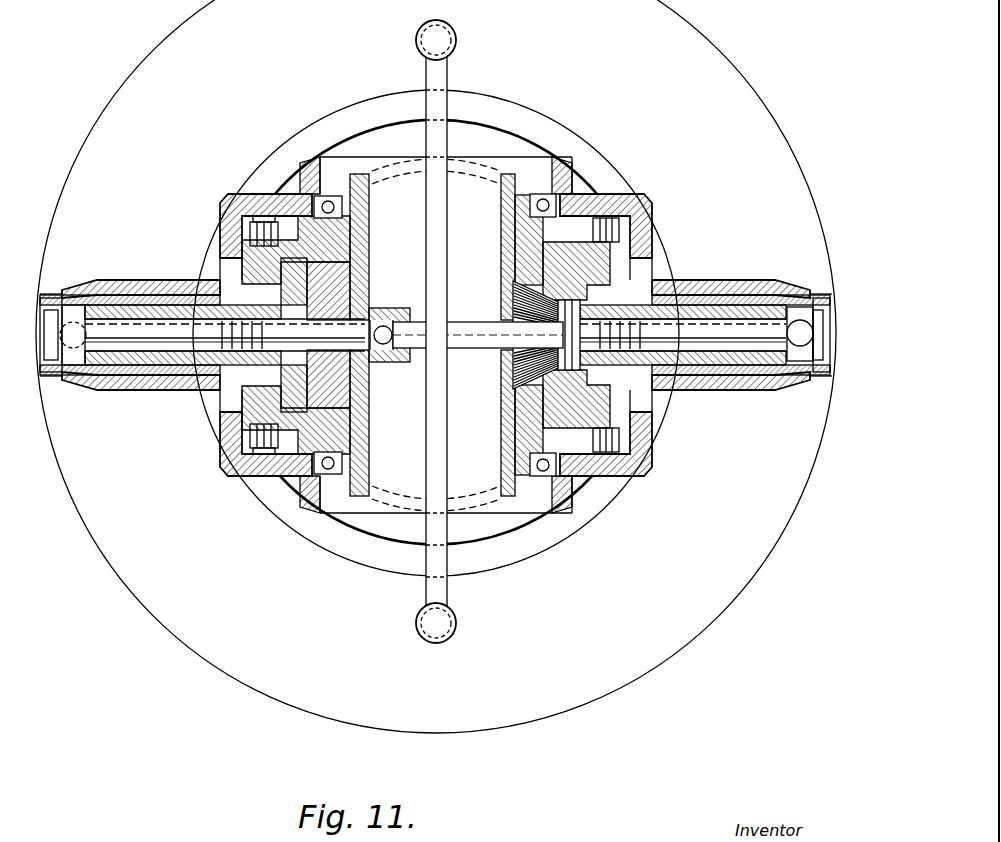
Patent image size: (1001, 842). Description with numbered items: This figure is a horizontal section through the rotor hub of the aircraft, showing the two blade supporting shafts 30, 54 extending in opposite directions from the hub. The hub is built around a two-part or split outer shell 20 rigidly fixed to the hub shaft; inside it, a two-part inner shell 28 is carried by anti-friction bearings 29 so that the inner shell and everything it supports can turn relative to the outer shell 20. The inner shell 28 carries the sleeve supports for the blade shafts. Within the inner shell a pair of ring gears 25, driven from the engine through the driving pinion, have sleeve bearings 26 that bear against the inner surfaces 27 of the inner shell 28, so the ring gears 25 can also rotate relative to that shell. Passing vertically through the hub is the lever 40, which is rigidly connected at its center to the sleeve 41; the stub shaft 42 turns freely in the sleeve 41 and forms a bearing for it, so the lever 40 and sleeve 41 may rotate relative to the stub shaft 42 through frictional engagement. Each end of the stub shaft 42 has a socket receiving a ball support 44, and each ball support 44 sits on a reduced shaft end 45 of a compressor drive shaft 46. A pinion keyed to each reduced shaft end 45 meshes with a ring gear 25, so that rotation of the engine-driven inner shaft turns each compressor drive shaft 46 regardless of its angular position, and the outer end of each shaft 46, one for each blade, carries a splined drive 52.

The outer shell 20 is at (236, 200).
The ring gear 25 is at (367, 272).
The sleeve bearing 26 is at (502, 245).
The inner surface 27 is at (367, 240).
The inner shell 28 is at (597, 420).
The anti-friction bearing 29 is at (312, 180).
The supporting shaft 30 is at (178, 280).
The lever 40 is at (448, 77).
The sleeve 41 is at (380, 318).
The stub shaft 42 is at (400, 320).
The ball support 44 is at (360, 400).
The reduced shaft end 45 is at (503, 388).
The compressor drive shaft 46 is at (762, 334).
The splined drive 52 is at (52, 296).
The supporting shaft 54 is at (58, 380).